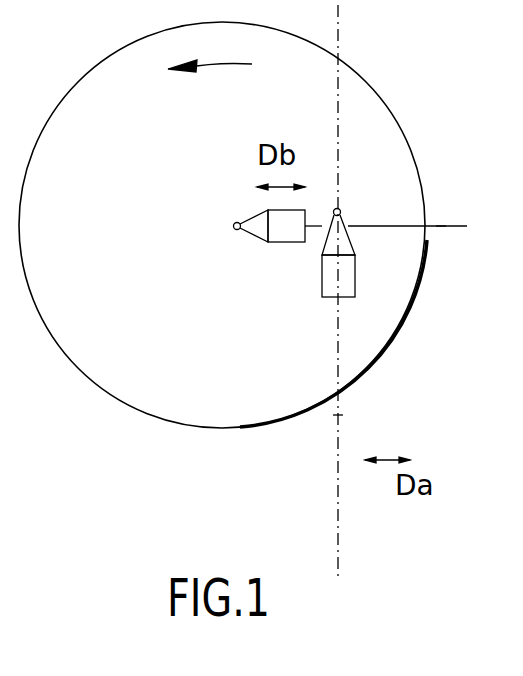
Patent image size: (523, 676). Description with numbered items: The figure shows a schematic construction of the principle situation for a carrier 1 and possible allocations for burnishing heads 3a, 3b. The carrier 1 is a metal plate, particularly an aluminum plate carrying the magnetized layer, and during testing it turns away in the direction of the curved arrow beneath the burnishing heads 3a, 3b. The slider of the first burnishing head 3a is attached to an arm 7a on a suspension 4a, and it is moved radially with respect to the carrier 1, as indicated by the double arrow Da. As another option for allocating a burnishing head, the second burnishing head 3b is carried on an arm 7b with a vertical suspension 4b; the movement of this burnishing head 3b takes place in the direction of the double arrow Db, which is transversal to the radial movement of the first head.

The carrier 1 is at (132, 242).
The burnishing head 3a is at (356, 203).
The burnishing head 3b is at (232, 270).
The suspension 4a is at (355, 285).
The vertical suspension 4b is at (288, 235).
The arm 7a is at (350, 413).
The arm 7b is at (442, 220).